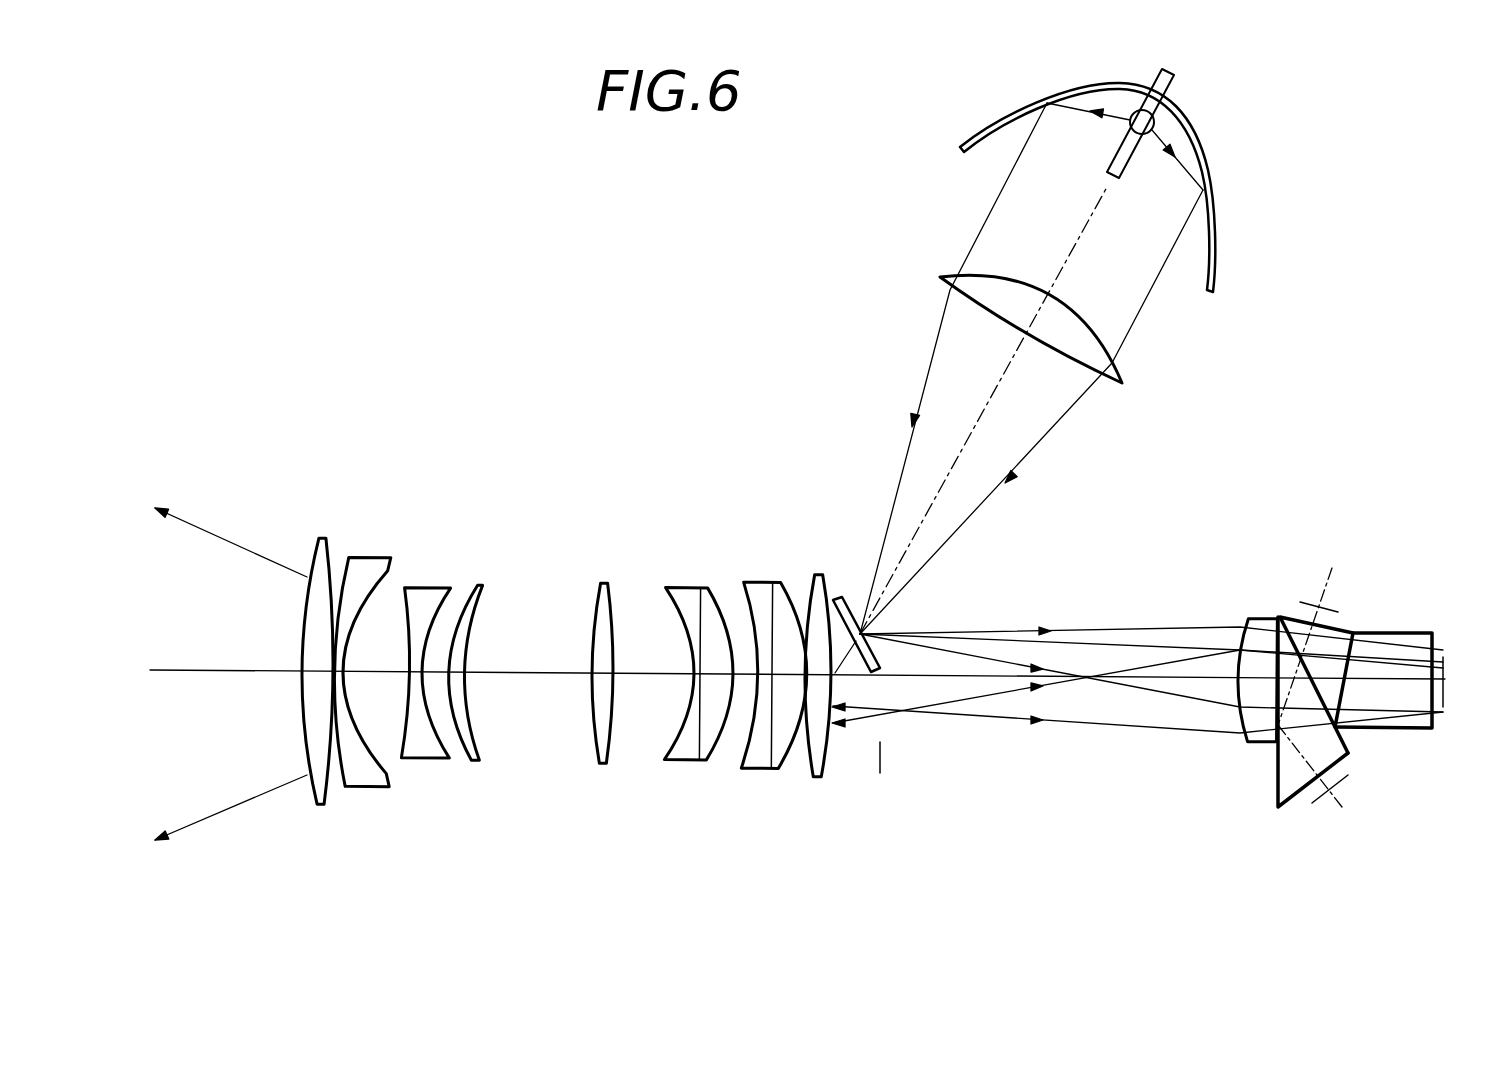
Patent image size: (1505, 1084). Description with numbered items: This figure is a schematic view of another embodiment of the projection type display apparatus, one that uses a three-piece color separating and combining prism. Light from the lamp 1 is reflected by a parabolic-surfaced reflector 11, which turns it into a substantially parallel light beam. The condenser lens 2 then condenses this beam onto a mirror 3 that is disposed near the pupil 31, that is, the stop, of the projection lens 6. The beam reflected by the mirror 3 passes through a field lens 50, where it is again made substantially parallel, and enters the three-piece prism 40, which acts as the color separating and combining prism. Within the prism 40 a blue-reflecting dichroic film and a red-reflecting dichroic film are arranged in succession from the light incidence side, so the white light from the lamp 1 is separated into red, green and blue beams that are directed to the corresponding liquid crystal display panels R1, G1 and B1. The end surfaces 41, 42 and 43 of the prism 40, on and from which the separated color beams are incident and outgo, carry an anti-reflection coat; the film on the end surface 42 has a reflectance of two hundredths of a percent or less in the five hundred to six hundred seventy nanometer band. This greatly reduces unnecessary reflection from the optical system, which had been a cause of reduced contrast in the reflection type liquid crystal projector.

The lamp 1 is at (1176, 74).
The parabolic-surfaced reflector 11 is at (1216, 249).
The condenser lens 2 is at (1124, 378).
The mirror 3 is at (841, 597).
The pupil 31 is at (881, 755).
The projection lens 6 is at (830, 833).
The field lens 50 is at (1255, 616).
The 3P prism 40 is at (1372, 712).
The end surface 41 is at (1352, 631).
The end surface 42 is at (1422, 633).
The end surface 43 is at (1291, 810).
The liquid crystal display panel R1 is at (1336, 601).
The liquid crystal display panel B1 is at (1347, 793).
The liquid crystal display panel G1 is at (1446, 665).